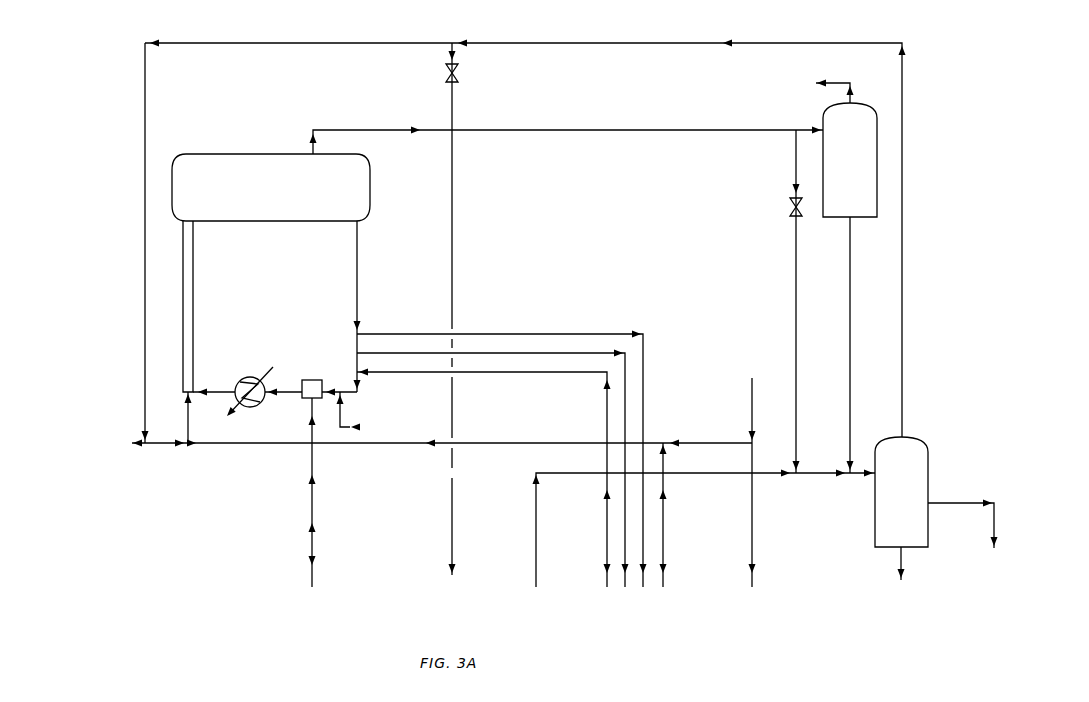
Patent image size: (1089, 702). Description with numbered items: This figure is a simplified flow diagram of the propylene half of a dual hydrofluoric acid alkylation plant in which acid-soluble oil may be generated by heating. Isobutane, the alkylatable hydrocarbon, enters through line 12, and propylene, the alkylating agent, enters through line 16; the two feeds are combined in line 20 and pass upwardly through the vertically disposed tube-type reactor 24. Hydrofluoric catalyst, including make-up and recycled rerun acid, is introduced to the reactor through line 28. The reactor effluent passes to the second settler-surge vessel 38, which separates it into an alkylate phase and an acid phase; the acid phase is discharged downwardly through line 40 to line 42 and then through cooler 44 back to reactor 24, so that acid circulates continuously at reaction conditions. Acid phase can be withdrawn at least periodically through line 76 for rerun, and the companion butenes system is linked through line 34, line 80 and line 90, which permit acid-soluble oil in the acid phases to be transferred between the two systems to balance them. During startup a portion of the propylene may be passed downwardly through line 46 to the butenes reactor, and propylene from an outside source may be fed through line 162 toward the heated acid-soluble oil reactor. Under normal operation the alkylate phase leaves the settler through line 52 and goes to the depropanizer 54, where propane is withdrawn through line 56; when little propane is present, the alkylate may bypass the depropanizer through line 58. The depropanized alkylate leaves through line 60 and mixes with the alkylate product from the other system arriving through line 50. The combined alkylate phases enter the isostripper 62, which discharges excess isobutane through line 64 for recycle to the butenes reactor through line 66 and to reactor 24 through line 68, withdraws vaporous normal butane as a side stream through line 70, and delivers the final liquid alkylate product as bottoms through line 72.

The isobutane feed line 12 is at (140, 445).
The propylene feed line 16 is at (388, 444).
The propylene line to acid-soluble oil reactor 162 is at (752, 534).
The combined feed line 20 is at (188, 422).
The tube-type reactor 24 is at (193, 248).
The hydrofluoric catalyst line 28 is at (340, 415).
The acid phase line 34 is at (312, 380).
The second settler-surge vessel 38 is at (271, 187).
The acid discharge line 40 is at (357, 248).
The acid return line 42 is at (357, 388).
The cooler 44 is at (255, 377).
The propylene bypass line 46 is at (663, 585).
The alkylate product line 50 is at (556, 473).
The alkylate withdrawal line 52 is at (342, 129).
The depropanizer 54 is at (850, 160).
The propane withdrawal line 56 is at (850, 84).
The depropanizer bypass line 58 is at (796, 308).
The depropanized alkylate line 60 is at (850, 308).
The isostripper 62 is at (901, 492).
The excess alkylatable hydrocarbon line 64 is at (836, 43).
The recycle line to first reactor 66 is at (452, 578).
The recycle line to second reactor 68 is at (145, 116).
The normal butane side stream line 70 is at (986, 503).
The alkylate product bottoms line 72 is at (900, 572).
The acid phase withdrawal line 76 is at (590, 333).
The acid-soluble oil transfer line 80 is at (602, 378).
The acid phase transfer line 90 is at (590, 352).